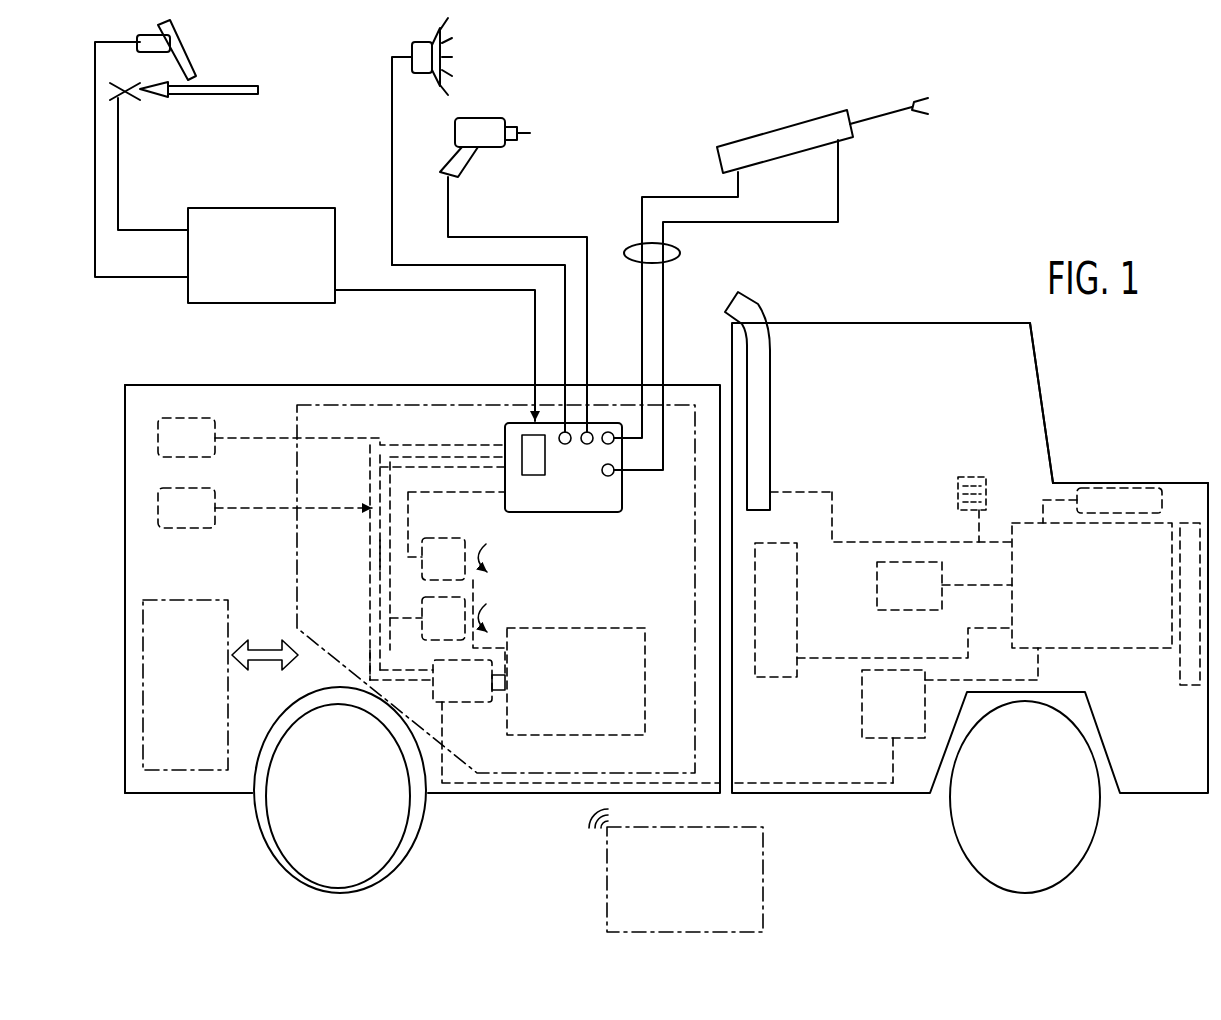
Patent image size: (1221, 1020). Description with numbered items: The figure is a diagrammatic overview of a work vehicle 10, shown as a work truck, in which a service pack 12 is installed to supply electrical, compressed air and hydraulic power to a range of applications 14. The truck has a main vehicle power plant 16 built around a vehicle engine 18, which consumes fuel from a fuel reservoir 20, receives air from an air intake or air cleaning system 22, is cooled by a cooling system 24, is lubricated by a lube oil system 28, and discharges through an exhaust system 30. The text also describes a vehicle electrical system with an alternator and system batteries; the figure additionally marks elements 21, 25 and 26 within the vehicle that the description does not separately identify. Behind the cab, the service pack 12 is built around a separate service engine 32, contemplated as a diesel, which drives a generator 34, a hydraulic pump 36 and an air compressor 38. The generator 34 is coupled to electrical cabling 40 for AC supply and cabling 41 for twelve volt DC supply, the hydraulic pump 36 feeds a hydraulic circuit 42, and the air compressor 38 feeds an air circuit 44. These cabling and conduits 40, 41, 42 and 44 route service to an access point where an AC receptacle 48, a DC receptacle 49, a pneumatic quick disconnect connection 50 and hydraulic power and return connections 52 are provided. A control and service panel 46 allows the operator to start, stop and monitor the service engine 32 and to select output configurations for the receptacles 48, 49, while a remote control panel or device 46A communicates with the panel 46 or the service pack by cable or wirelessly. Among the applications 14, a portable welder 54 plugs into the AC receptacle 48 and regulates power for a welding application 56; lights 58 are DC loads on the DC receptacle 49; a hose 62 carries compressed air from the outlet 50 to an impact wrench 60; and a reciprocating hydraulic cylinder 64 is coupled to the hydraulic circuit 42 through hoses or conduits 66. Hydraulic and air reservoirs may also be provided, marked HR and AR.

The work vehicle 10 is at (186, 815).
The service pack 12 is at (295, 580).
The applications 14 is at (870, 190).
The main vehicle power plant 16 is at (1062, 411).
The vehicle engine 18 is at (1087, 650).
The fuel reservoir 20 is at (778, 679).
The chassis 21 is at (808, 749).
The air intake or air cleaning system 22 is at (1096, 486).
The cooling system 24 is at (1195, 686).
The battery 25 is at (881, 741).
The ignition switch 26 is at (956, 491).
The lube oil system 28 is at (875, 578).
The exhaust system 30 is at (766, 424).
The service engine 32 is at (564, 627).
The generator 34 is at (463, 703).
The hydraulic pump 36 is at (440, 641).
The air compressor 38 is at (436, 540).
The electrical cabling 40 is at (371, 610).
The electrical cabling 41 is at (378, 655).
The hydraulic circuit 42 is at (390, 558).
The air circuit 44 is at (406, 500).
The control and service panel 46 is at (184, 598).
The remote control panel or device 46A is at (764, 878).
The electrical receptacle 48 is at (520, 440).
The electrical receptacle 49 is at (562, 430).
The pneumatic connection 50 is at (590, 430).
The hydraulic power and return connections 52 is at (613, 474).
The portable welder 54 is at (273, 207).
The welding application 56 is at (232, 86).
The lights 58 is at (412, 44).
The impact wrench 60 is at (500, 117).
The hose 62 is at (521, 236).
The reciprocating hydraulic cylinder 64 is at (790, 125).
The hoses or conduits 66 is at (640, 249).